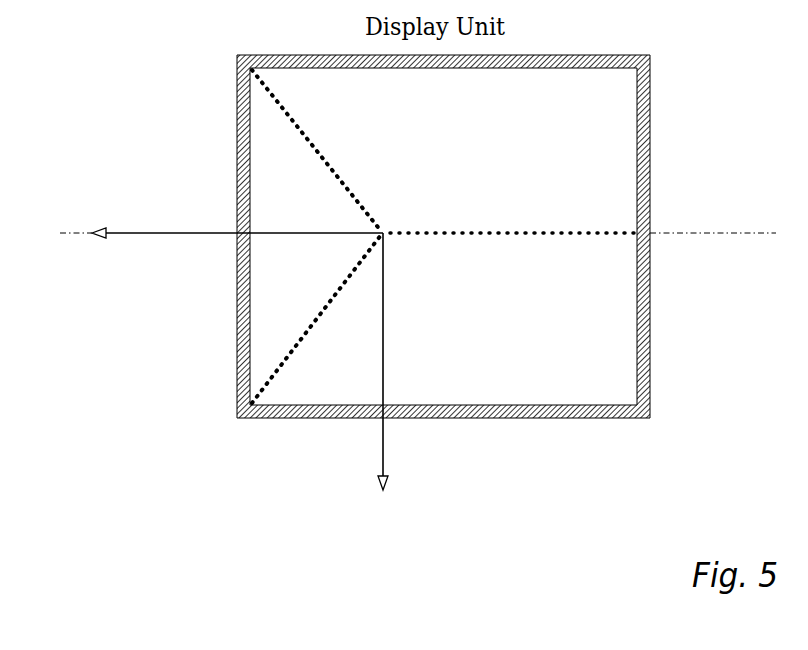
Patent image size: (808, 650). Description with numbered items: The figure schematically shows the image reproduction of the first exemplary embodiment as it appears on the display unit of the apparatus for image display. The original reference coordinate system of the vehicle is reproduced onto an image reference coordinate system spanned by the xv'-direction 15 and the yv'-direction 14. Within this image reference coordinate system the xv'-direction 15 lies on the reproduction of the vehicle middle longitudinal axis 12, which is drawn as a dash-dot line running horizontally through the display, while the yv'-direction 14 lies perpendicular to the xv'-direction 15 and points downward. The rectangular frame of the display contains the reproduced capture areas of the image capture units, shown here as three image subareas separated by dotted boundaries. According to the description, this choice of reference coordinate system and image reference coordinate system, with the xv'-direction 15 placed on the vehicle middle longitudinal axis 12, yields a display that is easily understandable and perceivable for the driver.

The vehicle middle longitudinal axis 12 is at (677, 233).
The yv'-direction 14 is at (380, 433).
The xv'-direction 15 is at (198, 237).